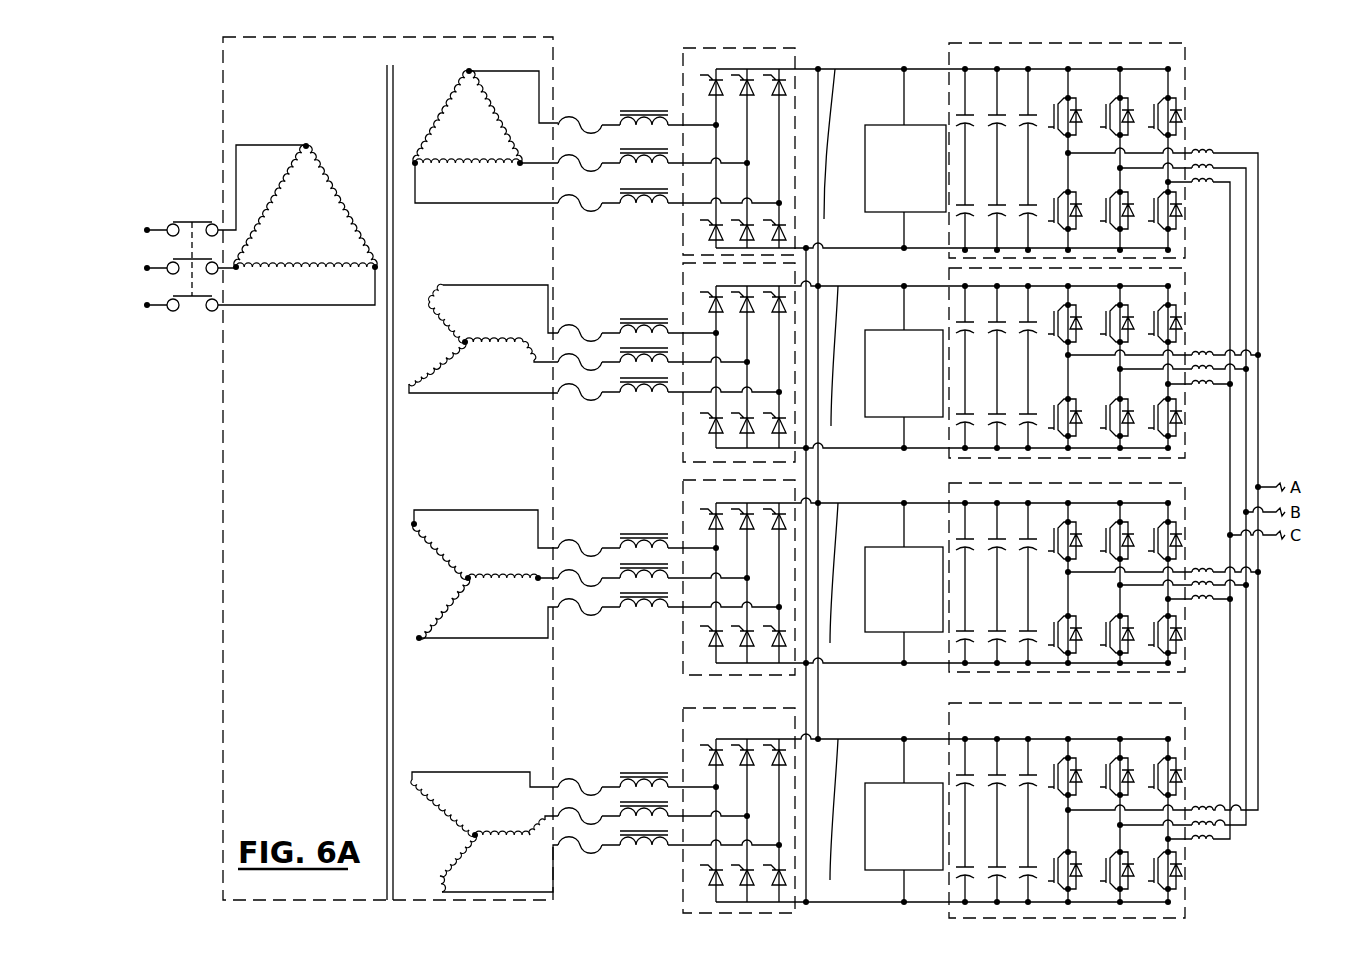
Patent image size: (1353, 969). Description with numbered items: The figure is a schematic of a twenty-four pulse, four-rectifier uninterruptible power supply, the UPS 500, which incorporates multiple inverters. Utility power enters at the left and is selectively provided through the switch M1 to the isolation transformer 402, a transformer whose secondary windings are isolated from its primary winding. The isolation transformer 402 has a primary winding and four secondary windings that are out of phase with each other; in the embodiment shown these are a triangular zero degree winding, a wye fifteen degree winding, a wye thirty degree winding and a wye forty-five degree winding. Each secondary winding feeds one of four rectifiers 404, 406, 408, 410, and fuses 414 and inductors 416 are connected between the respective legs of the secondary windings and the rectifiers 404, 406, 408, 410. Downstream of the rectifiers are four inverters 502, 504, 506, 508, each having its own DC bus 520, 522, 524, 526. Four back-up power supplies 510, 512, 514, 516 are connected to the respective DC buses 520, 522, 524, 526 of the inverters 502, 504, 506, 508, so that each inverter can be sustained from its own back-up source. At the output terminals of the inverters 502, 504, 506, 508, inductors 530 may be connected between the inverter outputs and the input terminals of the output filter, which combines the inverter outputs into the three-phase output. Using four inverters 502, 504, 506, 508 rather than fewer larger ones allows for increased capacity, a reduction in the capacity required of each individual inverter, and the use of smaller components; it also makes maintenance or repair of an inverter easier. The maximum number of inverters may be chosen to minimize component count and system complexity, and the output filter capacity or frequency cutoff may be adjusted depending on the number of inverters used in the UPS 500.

The UPS 500 is at (204, 53).
The switch M1 is at (190, 217).
The isolation transformer 402 is at (556, 52).
The rectifier 404 is at (793, 50).
The rectifier 406 is at (683, 268).
The rectifier 408 is at (683, 485).
The rectifier 410 is at (683, 725).
The fuses 414 is at (582, 162).
The inductors 416 is at (644, 108).
The inverter 502 is at (1188, 48).
The inverter 504 is at (948, 279).
The inverter 506 is at (948, 491).
The inverter 508 is at (948, 713).
The back-up power supply 510 is at (865, 125).
The back-up power supply 512 is at (865, 330).
The back-up power supply 514 is at (865, 547).
The back-up power supply 516 is at (865, 783).
The DC bus 520 is at (824, 219).
The DC bus 522 is at (831, 426).
The DC bus 524 is at (830, 643).
The DC bus 526 is at (830, 880).
The inductors 530 is at (1210, 180).